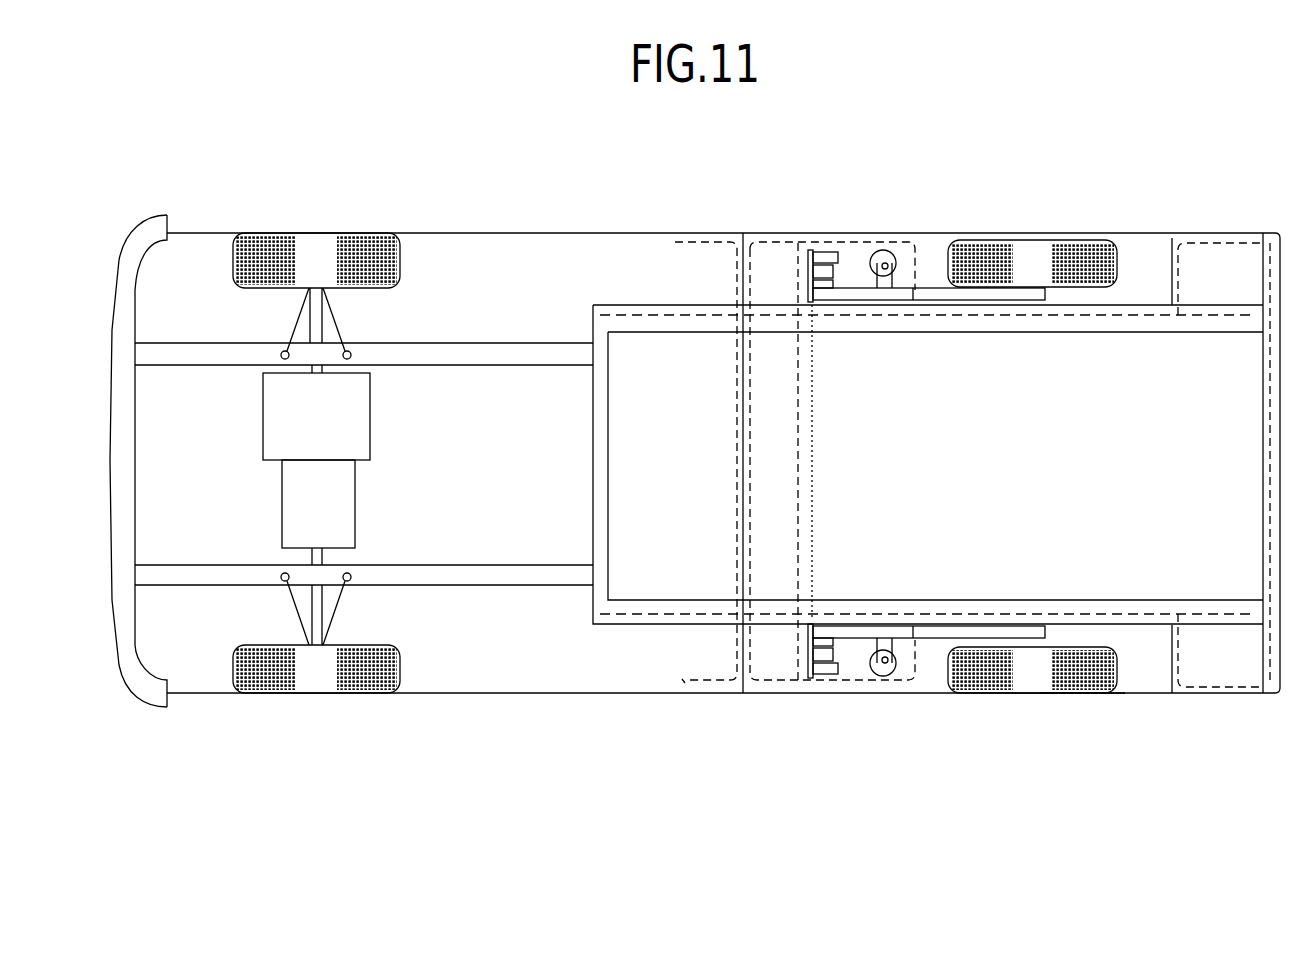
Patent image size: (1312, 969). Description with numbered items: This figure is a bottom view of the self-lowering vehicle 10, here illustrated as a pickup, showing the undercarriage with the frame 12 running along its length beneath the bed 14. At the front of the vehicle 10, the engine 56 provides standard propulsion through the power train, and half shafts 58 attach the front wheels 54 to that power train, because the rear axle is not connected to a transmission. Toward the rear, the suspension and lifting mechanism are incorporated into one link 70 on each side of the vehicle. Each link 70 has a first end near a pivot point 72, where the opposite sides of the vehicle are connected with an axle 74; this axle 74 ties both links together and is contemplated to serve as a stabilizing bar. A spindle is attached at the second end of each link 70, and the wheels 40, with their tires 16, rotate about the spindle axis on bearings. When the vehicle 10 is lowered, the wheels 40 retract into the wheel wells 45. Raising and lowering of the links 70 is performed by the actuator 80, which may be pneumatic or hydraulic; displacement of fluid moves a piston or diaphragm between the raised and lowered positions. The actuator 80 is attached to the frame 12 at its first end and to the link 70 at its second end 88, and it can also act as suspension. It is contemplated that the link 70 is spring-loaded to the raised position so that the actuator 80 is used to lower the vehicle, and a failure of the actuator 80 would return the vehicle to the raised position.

The vehicle 10 is at (574, 170).
The frame 12 is at (832, 320).
The bed 14 is at (926, 445).
The tires 16 is at (1055, 255).
The wheels 40 is at (1058, 700).
The wheel wells 45 is at (1150, 258).
The front wheels 54 is at (337, 222).
The engine 56 is at (334, 441).
The half shafts 58 is at (323, 323).
The link 70 is at (950, 310).
The pivot point 72 is at (828, 246).
The axle 74 is at (810, 488).
The actuator 80 is at (886, 250).
The second end 88 is at (894, 258).